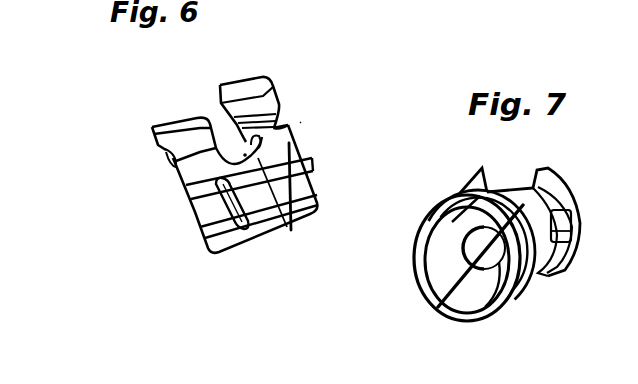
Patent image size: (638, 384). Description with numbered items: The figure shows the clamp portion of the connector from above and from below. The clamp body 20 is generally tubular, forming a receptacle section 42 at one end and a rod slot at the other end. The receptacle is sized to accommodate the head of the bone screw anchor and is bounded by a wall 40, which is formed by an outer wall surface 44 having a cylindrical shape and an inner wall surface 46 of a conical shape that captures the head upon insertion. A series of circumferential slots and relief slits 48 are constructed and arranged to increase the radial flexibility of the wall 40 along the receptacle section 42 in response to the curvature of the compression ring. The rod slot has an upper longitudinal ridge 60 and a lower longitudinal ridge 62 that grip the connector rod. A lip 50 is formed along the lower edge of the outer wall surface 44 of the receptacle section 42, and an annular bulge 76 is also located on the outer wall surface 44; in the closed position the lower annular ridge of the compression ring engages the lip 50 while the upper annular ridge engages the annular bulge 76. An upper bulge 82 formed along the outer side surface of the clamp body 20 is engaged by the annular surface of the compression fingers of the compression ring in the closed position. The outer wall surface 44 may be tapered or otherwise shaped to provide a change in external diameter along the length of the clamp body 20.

In FIG. 6, the clamp body 20 is at (300, 122).
In FIG. 7, the clamp body 20 is at (533, 188).
In FIG. 6, the wall 40 is at (189, 185).
In FIG. 7, the receptacle section 42 is at (417, 311).
In FIG. 6, the outer wall surface 44 is at (304, 188).
In FIG. 7, the inner wall surface 46 is at (475, 302).
In FIG. 6, the relief slits 48 is at (291, 232).
In FIG. 6, the lip 50 is at (216, 253).
In FIG. 6, the upper longitudinal ridge 60 is at (218, 98).
In FIG. 6, the lower longitudinal ridge 62 is at (234, 120).
In FIG. 6, the annular bulge 76 is at (199, 229).
In FIG. 6, the upper bulge 82 is at (276, 84).